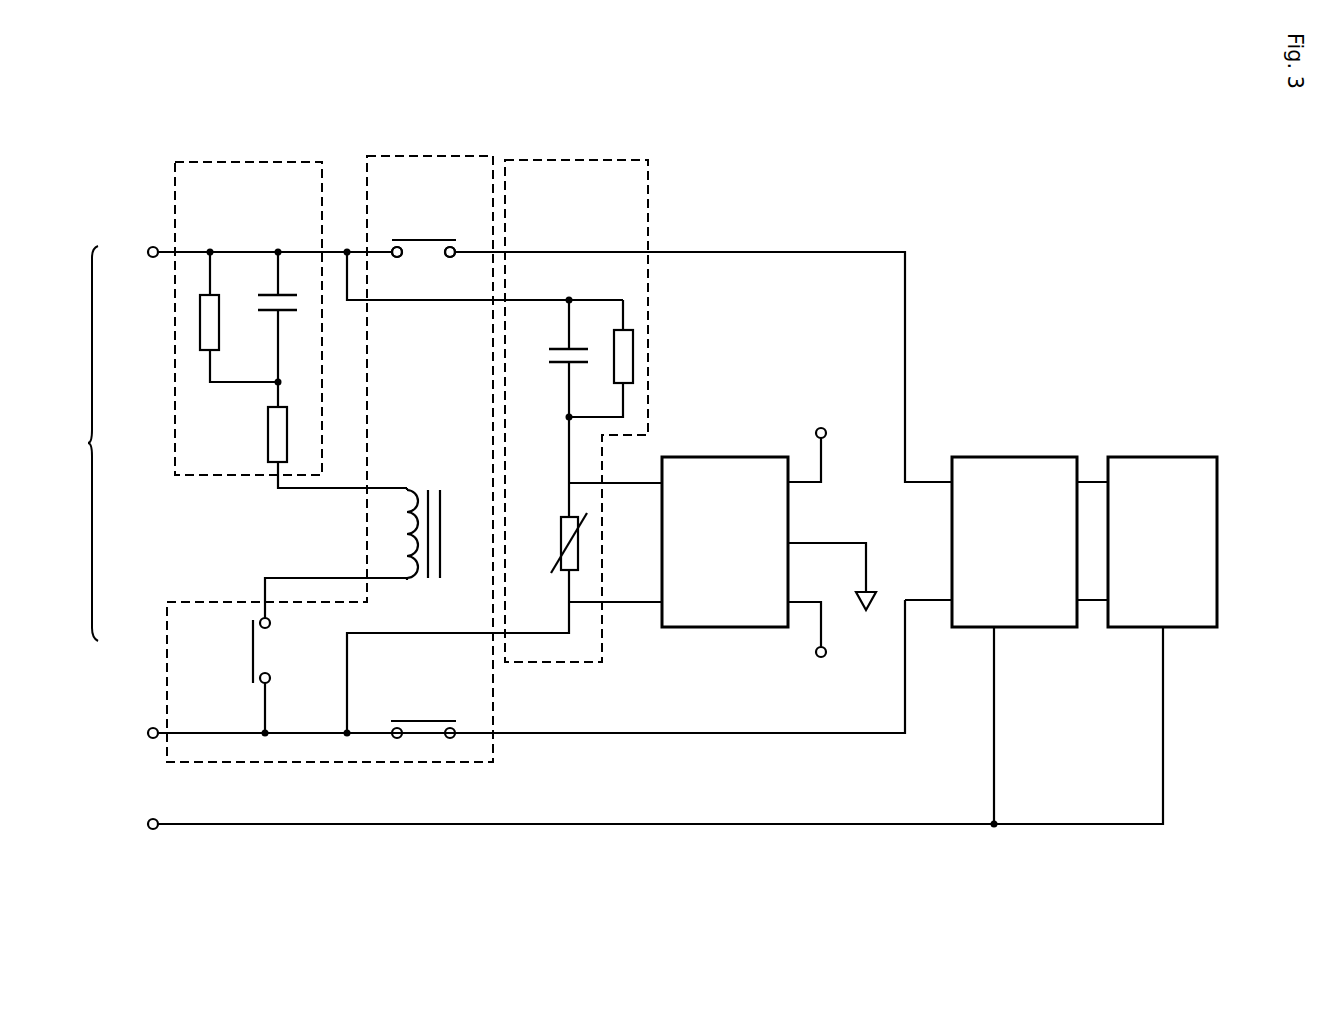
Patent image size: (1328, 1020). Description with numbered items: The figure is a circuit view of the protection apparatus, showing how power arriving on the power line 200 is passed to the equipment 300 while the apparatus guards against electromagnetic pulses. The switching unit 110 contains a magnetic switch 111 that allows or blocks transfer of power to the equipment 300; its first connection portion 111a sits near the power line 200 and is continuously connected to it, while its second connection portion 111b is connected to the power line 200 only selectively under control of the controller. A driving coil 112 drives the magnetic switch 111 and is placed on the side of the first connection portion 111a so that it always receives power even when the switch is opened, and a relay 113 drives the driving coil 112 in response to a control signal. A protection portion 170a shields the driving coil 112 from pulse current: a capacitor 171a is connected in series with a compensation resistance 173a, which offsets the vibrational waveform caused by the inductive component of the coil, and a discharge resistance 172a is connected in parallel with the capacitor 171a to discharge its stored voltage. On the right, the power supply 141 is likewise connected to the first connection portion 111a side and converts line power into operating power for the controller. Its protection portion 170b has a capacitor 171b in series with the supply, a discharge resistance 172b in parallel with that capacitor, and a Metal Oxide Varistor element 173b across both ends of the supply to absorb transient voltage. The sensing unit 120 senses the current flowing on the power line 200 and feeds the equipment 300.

The switching unit 110 is at (430, 155).
The magnetic switch 111 is at (424, 237).
The first connection portion 111a is at (392, 249).
The second connection portion 111b is at (455, 248).
The driving coil 112 is at (423, 489).
The relay 113 is at (252, 649).
The sensing unit 120 is at (994, 456).
The power supply 141 is at (708, 456).
The protection portion 170a is at (247, 160).
The protection portion 170b is at (594, 158).
The capacitor 171a is at (284, 294).
The capacitor 171b is at (634, 357).
The discharge resistance 172a is at (220, 324).
The discharge resistance 172b is at (583, 347).
The compensation resistance 173a is at (267, 433).
The Metal Oxide Varistor element 173b is at (561, 516).
The power line 200 is at (73, 443).
The equipment 300 is at (1140, 456).